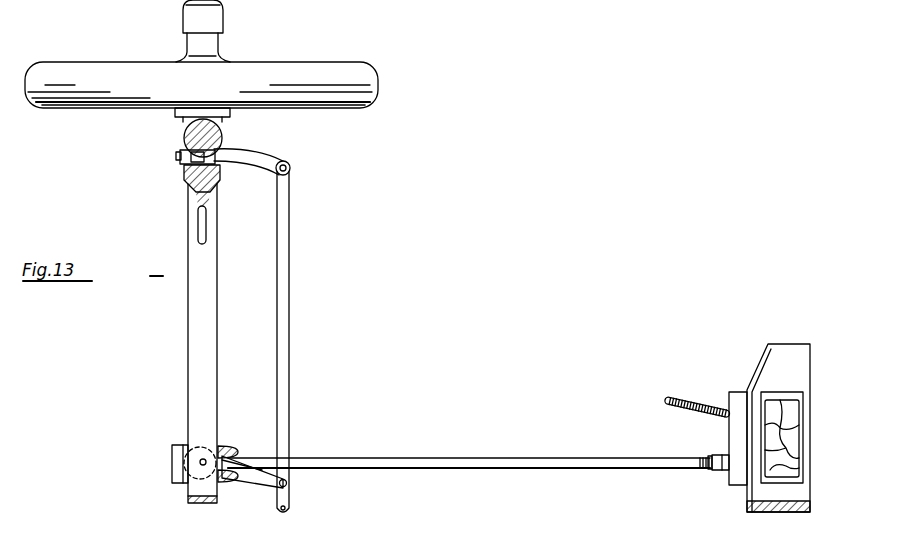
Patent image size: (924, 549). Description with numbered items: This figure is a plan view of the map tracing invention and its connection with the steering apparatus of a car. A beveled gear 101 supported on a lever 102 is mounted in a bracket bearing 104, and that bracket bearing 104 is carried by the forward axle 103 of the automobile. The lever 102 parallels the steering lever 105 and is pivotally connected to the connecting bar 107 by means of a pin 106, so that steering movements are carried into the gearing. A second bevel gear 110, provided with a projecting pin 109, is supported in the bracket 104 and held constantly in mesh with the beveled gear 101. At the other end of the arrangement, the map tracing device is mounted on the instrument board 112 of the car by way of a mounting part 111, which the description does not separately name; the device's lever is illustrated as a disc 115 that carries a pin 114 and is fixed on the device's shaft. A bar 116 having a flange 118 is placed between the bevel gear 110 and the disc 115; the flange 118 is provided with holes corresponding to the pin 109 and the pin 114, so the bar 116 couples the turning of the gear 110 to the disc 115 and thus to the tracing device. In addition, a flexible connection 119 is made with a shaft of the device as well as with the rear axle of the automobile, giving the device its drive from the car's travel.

The beveled gear 101 is at (185, 487).
The lever 102 is at (270, 483).
The forward axle 103 is at (188, 311).
The bracket bearing 104 is at (172, 462).
The steering lever 105 is at (251, 156).
The pin 106 is at (291, 484).
The connecting bar 107 is at (289, 388).
The projecting pin 109 is at (237, 467).
The bevel gear 110 is at (229, 447).
The bracket 111 is at (737, 480).
The instrument board 112 is at (778, 497).
The pin 114 is at (706, 470).
The disc 115 is at (726, 456).
The bar 116 is at (487, 458).
The flange 118 is at (709, 460).
The flexible connection 119 is at (676, 400).